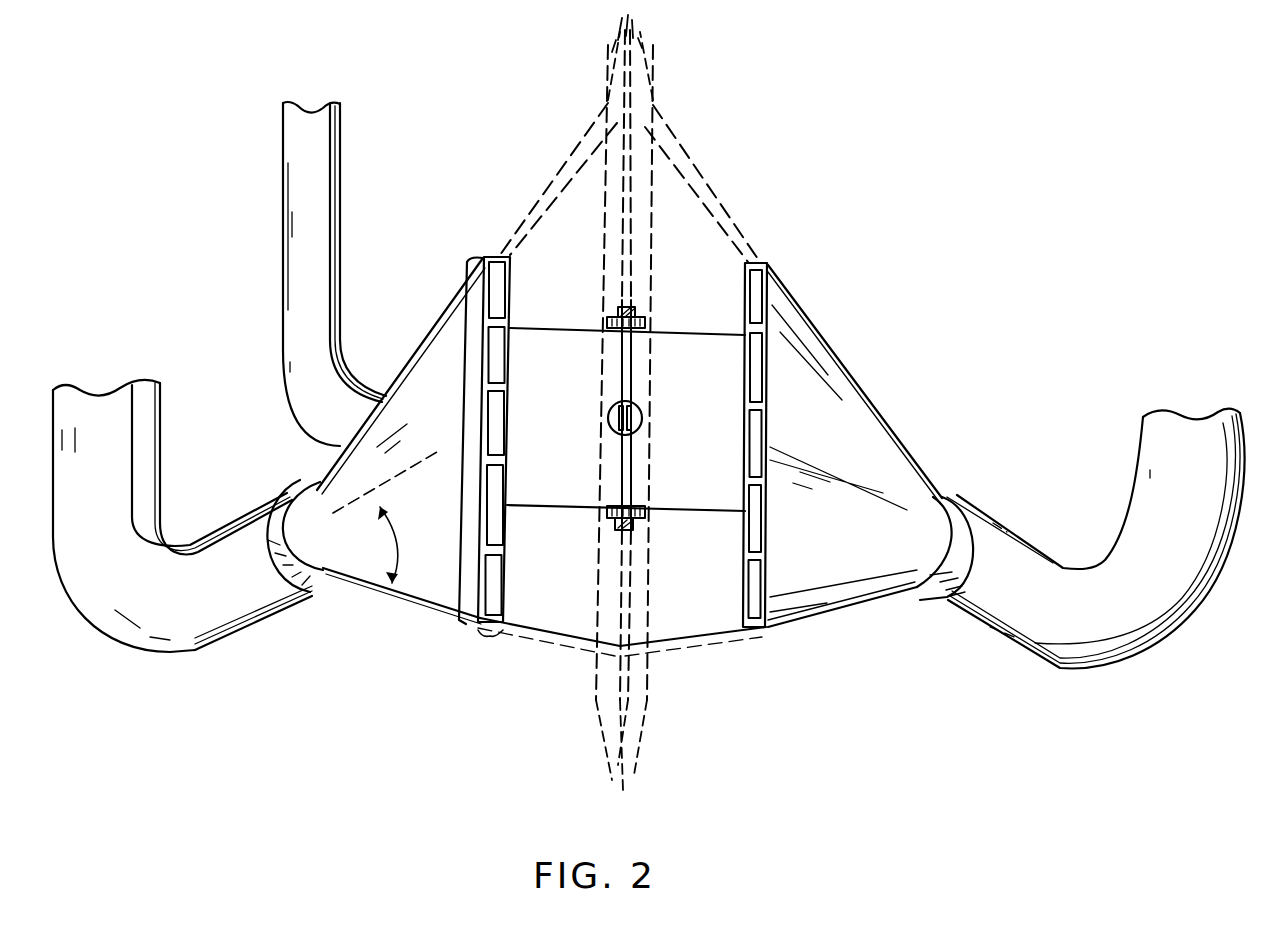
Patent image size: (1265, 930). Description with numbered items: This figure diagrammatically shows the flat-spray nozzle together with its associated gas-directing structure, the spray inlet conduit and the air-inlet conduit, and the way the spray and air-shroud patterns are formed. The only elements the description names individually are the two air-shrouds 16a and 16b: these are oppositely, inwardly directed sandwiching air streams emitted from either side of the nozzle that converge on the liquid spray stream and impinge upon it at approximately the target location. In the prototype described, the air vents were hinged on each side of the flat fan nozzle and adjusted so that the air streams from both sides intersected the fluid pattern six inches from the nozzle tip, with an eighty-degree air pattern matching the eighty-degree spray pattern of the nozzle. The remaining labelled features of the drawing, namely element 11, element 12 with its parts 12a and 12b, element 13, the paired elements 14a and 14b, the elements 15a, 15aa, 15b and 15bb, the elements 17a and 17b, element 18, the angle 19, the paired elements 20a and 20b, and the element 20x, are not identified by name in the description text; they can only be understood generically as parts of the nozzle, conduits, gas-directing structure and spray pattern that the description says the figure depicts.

The inlet tube 11 is at (322, 190).
The hub 12 is at (612, 427).
The hub vane 12a is at (610, 418).
The hub vane 12b is at (641, 418).
The shaft 13 is at (622, 615).
The left outlet duct 14a is at (263, 592).
The right outlet duct 14b is at (983, 560).
The right slat frame 15a is at (768, 526).
The left slat frame 15aa is at (485, 500).
The right slats 15b is at (745, 455).
The left slats 15bb is at (510, 358).
The air-shroud 16a is at (650, 190).
The air-shroud 16b is at (612, 232).
The upper shaft end 17a is at (636, 63).
The lower shaft end 17b is at (622, 768).
The housing frame 18 is at (466, 442).
The duct angle 19 is at (385, 538).
The right collar 20a is at (928, 552).
The left collar 20b is at (318, 500).
The bracket 20x is at (490, 638).